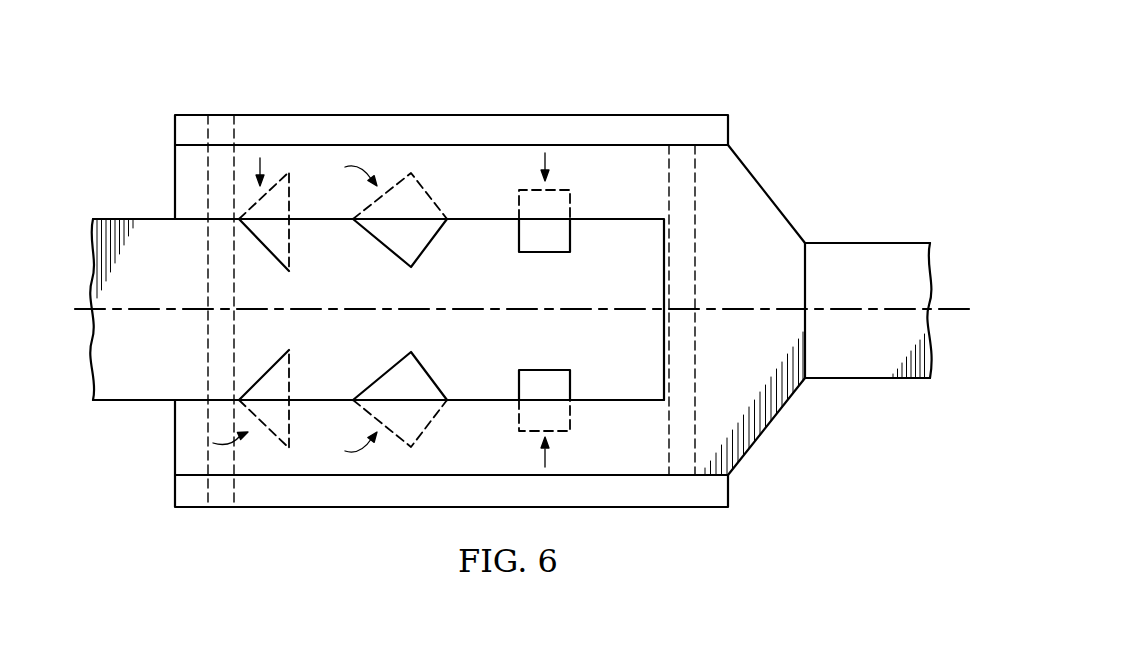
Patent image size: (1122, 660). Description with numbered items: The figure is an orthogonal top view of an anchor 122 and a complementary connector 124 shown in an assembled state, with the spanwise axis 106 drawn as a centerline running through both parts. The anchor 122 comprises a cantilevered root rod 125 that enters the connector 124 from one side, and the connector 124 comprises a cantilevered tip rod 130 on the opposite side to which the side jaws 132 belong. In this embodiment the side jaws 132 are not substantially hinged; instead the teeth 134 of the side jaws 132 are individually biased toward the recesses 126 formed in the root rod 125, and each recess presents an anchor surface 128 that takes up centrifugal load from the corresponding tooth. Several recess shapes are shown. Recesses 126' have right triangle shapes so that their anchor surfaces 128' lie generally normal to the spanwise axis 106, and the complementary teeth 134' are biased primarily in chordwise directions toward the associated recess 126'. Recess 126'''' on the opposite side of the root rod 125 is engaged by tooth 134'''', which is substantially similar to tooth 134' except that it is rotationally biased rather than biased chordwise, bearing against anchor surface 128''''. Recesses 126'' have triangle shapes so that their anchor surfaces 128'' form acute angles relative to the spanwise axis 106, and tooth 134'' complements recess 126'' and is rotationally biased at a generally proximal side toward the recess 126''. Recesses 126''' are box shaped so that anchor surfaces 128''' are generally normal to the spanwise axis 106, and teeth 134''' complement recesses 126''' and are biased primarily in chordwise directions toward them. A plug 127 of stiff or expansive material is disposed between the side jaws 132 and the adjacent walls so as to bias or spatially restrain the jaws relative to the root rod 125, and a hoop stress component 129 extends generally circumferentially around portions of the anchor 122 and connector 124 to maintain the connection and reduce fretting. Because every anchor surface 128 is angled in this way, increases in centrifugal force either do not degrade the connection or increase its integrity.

The spanwise axis 106 is at (953, 309).
The anchor 122 is at (140, 212).
The connector 124 is at (776, 190).
The root rod 125 is at (130, 392).
The recesses 126 is at (405, 297).
The recesses 126' is at (263, 161).
The recesses 126'' is at (426, 313).
The recesses 126''' is at (585, 314).
The recess 126'''' is at (224, 446).
The plug 127 is at (450, 113).
The anchor surfaces 128 is at (395, 309).
The anchor surfaces 128' is at (214, 259).
The anchor surfaces 128'' is at (430, 309).
The anchor surfaces 128''' is at (590, 309).
The anchor surface 128'''' is at (208, 360).
The hoop stress component 129 is at (696, 258).
The tip rod 130 is at (873, 370).
The side jaws 132 is at (401, 155).
The teeth 134 is at (363, 310).
The teeth 134' is at (200, 211).
The tooth 134'' is at (356, 309).
The teeth 134''' is at (564, 310).
The tooth 134'''' is at (197, 400).